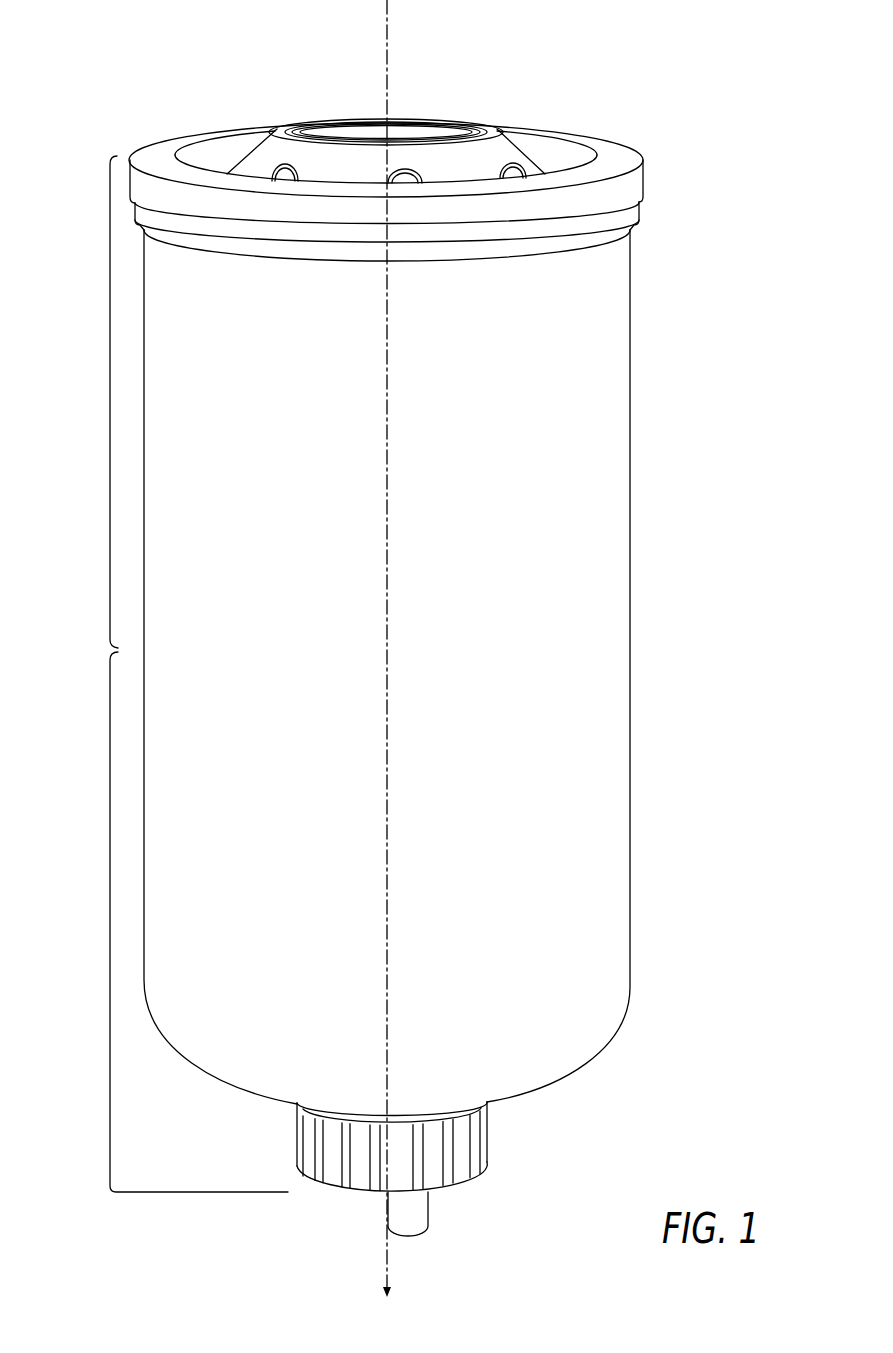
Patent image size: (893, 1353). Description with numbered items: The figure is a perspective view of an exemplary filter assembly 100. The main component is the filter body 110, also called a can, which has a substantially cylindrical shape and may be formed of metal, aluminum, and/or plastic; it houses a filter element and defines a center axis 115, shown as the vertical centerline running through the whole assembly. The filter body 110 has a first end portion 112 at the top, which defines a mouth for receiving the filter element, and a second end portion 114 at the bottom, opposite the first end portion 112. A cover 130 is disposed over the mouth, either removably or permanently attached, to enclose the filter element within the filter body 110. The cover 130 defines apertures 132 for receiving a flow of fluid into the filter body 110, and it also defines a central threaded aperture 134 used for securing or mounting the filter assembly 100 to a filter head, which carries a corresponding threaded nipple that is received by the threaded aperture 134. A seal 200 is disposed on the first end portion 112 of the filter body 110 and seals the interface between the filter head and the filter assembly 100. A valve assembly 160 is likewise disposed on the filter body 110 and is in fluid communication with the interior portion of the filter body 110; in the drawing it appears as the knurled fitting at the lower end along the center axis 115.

The filter assembly 100 is at (72, 52).
The filter body 110 is at (630, 343).
The first end portion 112 is at (112, 411).
The second end portion 114 is at (112, 905).
The center axis 115 is at (388, 1252).
The cover 130 is at (505, 148).
The apertures 132 is at (402, 170).
The threaded aperture 134 is at (424, 130).
The valve assembly 160 is at (490, 1158).
The seal 200 is at (633, 182).